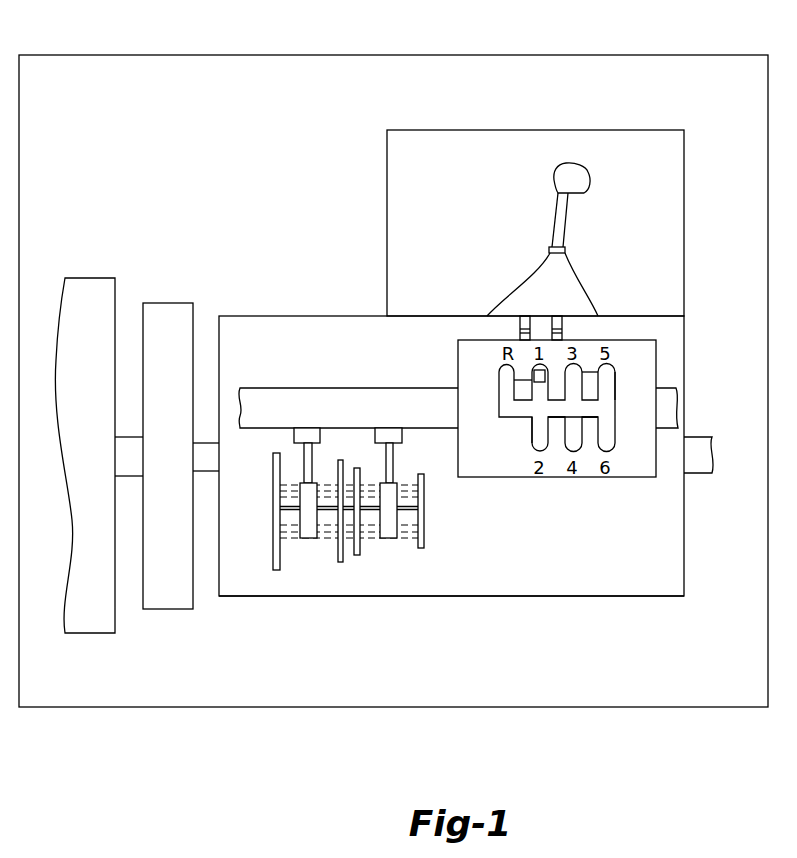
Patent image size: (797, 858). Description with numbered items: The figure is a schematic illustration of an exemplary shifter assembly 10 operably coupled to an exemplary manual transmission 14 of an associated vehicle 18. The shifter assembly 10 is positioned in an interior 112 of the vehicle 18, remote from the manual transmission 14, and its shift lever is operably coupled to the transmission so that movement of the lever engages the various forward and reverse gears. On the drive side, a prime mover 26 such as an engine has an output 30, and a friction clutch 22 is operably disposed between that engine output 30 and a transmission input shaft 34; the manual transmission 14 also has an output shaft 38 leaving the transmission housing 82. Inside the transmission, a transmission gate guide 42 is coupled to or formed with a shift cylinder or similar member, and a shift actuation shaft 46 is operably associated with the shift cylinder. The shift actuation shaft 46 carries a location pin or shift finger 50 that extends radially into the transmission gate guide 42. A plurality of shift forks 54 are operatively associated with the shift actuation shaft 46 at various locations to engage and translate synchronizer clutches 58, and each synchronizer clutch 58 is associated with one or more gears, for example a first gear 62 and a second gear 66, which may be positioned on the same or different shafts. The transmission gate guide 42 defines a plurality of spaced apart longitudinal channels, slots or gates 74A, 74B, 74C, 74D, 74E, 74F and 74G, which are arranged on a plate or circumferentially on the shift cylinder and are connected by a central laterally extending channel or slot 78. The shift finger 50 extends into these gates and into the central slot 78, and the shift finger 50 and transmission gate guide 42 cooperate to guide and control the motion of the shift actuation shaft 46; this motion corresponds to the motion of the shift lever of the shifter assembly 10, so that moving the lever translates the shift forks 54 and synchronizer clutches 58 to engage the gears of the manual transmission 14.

The vehicle 18 is at (493, 53).
The interior 112 is at (573, 130).
The shifter assembly 10 is at (578, 247).
The prime mover 26 is at (102, 278).
The clutch 22 is at (173, 302).
The output 30 is at (128, 477).
The transmission input shaft 34 is at (203, 472).
The manual transmission 14 is at (237, 315).
The shift actuation shaft 46 is at (348, 388).
The shift fork 54 is at (300, 458).
The synchronizer clutch 58 is at (307, 541).
The first gear 62 is at (277, 577).
The second gear 66 is at (340, 567).
The output shaft 38 is at (700, 478).
The transmission housing 82 is at (610, 597).
The transmission gate guide 42 is at (656, 362).
The shift finger 50 is at (525, 371).
The gate 74G is at (497, 398).
The gate 74A is at (522, 383).
The gate 74B is at (518, 433).
The gate 74C is at (592, 367).
The gate 74D is at (555, 437).
The gate 74E is at (613, 380).
The gate 74F is at (588, 433).
The central laterally extending slot 78 is at (585, 407).